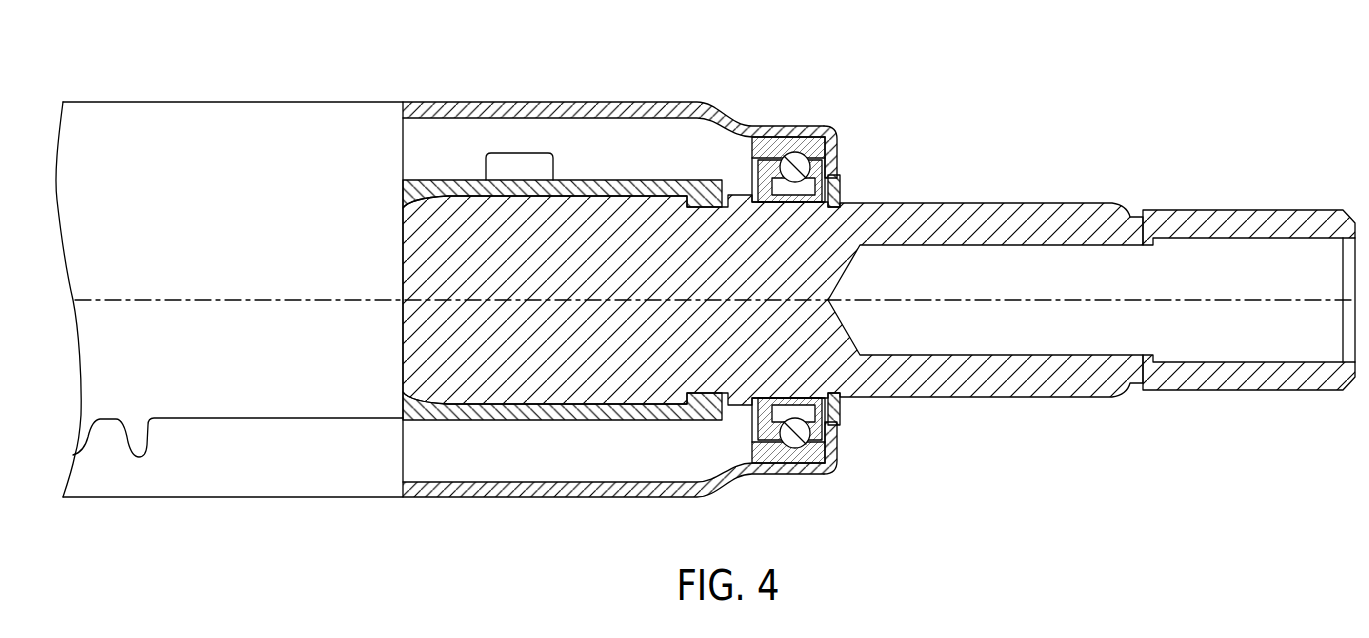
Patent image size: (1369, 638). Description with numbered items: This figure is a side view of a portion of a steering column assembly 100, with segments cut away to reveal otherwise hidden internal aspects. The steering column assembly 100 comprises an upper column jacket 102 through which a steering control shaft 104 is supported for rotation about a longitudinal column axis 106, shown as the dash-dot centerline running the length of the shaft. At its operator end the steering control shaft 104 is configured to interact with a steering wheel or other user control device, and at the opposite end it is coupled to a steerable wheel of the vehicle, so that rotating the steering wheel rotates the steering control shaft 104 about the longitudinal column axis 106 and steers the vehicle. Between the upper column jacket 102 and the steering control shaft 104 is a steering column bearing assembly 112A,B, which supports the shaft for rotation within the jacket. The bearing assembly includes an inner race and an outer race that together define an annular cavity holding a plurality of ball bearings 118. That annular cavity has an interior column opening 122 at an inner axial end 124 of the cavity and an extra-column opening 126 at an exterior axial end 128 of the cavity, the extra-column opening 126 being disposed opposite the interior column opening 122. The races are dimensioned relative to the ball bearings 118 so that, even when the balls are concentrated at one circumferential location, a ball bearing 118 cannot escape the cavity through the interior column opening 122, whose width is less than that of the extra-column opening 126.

The steering column assembly 100 is at (921, 70).
The upper column jacket 102 is at (668, 104).
The steering control shaft 104 is at (1078, 204).
The longitudinal column axis 106 is at (1234, 301).
The steering column bearing assembly 112A,B is at (758, 486).
The ball bearing 118 is at (801, 437).
The interior column opening 122 is at (743, 437).
The inner axial end 124 is at (743, 160).
The extra-column opening 126 is at (838, 156).
The exterior axial end 128 is at (840, 191).